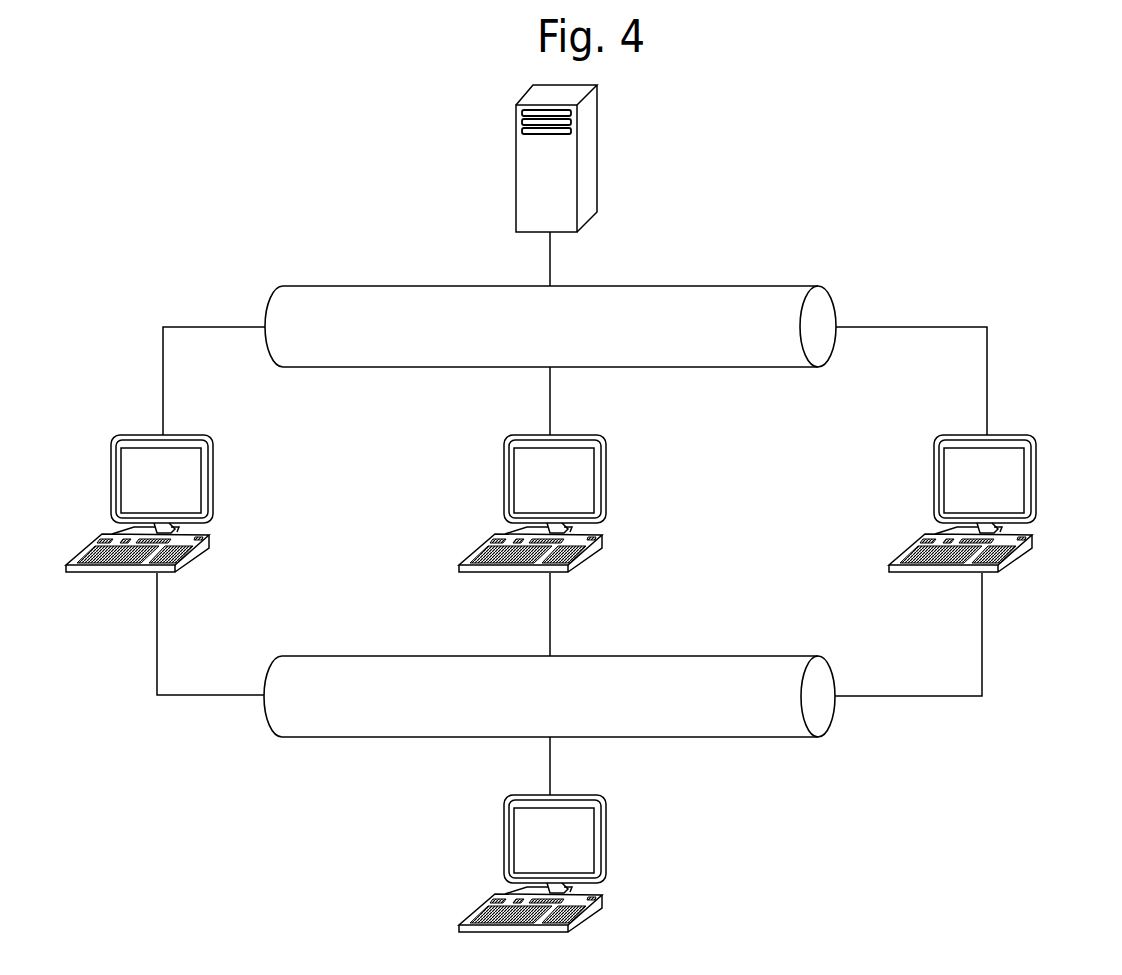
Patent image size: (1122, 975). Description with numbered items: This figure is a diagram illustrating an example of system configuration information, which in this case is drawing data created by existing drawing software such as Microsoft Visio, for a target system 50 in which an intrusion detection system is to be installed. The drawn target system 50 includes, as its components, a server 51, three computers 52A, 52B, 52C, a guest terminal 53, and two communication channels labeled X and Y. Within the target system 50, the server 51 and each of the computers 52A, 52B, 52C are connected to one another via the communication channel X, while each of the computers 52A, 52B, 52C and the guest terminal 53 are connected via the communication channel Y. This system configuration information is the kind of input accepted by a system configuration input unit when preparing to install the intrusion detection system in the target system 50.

The target system 50 is at (737, 122).
The server 51 is at (598, 118).
The computer 52A is at (207, 436).
The computer 52B is at (600, 436).
The computer 52C is at (1031, 436).
The guest terminal 53 is at (609, 852).